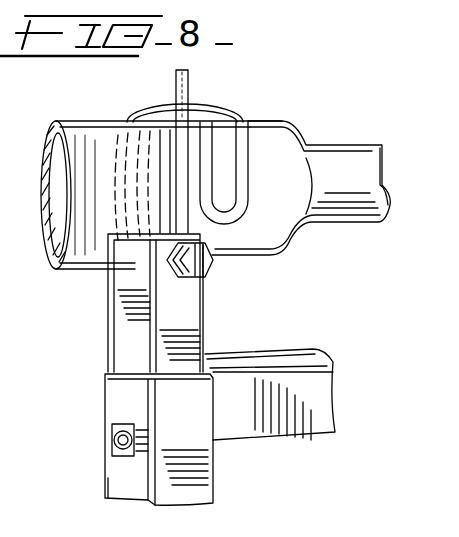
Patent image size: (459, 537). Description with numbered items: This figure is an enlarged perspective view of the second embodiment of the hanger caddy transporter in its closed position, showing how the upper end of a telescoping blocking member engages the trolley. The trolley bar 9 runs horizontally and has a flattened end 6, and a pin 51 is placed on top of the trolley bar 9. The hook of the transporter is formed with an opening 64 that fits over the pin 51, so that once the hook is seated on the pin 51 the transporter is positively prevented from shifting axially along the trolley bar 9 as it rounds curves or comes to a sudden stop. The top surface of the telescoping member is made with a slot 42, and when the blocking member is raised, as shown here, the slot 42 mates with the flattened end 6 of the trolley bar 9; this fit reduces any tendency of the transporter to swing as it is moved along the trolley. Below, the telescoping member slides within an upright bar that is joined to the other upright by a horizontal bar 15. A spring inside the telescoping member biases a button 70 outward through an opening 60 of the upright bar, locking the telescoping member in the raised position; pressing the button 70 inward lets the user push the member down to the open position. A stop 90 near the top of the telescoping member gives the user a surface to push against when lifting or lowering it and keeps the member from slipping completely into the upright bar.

The flattened end 6 is at (70, 170).
The trolley bar 9 is at (352, 165).
The horizontal bar 15 is at (286, 355).
The slot 42 is at (110, 277).
The pin 51 is at (184, 94).
The opening 60 is at (125, 448).
The opening 64 is at (222, 126).
The button 70 is at (113, 437).
The stop 90 is at (205, 265).